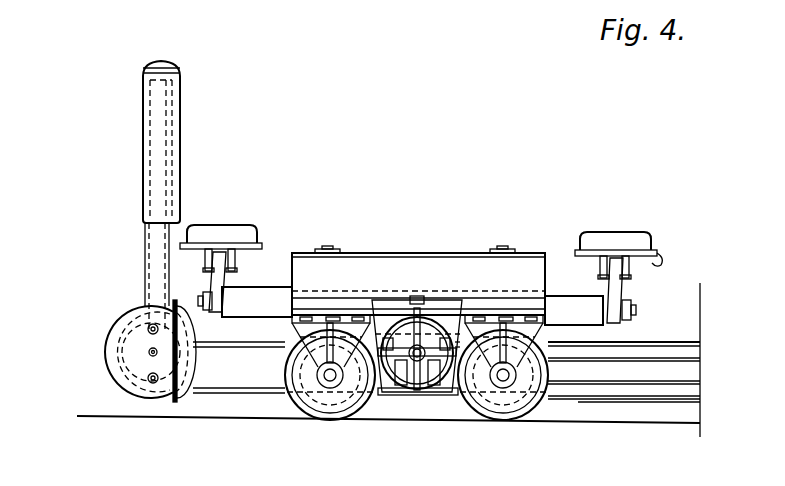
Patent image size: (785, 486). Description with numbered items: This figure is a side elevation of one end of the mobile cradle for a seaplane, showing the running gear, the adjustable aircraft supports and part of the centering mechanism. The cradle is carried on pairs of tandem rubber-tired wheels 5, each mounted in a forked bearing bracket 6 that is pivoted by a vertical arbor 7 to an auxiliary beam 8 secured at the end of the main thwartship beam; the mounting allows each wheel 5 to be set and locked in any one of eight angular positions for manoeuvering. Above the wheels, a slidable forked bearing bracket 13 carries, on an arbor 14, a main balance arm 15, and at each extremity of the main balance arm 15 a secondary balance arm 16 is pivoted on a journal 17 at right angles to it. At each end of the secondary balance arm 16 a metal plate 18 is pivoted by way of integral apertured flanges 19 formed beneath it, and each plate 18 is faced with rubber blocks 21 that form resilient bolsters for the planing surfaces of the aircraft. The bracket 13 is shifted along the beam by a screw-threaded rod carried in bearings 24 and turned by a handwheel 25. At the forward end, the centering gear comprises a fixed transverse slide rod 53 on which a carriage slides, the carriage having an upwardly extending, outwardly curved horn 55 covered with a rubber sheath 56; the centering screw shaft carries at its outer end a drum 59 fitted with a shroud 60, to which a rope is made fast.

The rubber-tired wheel 5 is at (326, 413).
The forked bearing bracket 6 is at (294, 386).
The vertical arbor 7 is at (333, 247).
The auxiliary beam 8 is at (419, 298).
The forked bearing bracket 13 is at (380, 254).
The arbor 14 is at (428, 292).
The main balance arm 15 is at (573, 312).
The secondary balance arm 16 is at (223, 279).
The journal 17 is at (200, 300).
The metal plate 18 is at (181, 251).
The apertured flange 19 is at (205, 272).
The rubber block 21 is at (223, 243).
The bearing 24 is at (424, 390).
The handwheel 25 is at (378, 396).
The transverse slide rod 53 is at (140, 326).
The horn 55 is at (165, 177).
The rubber sheath 56 is at (143, 107).
The drum 59 is at (135, 358).
The shroud 60 is at (143, 328).